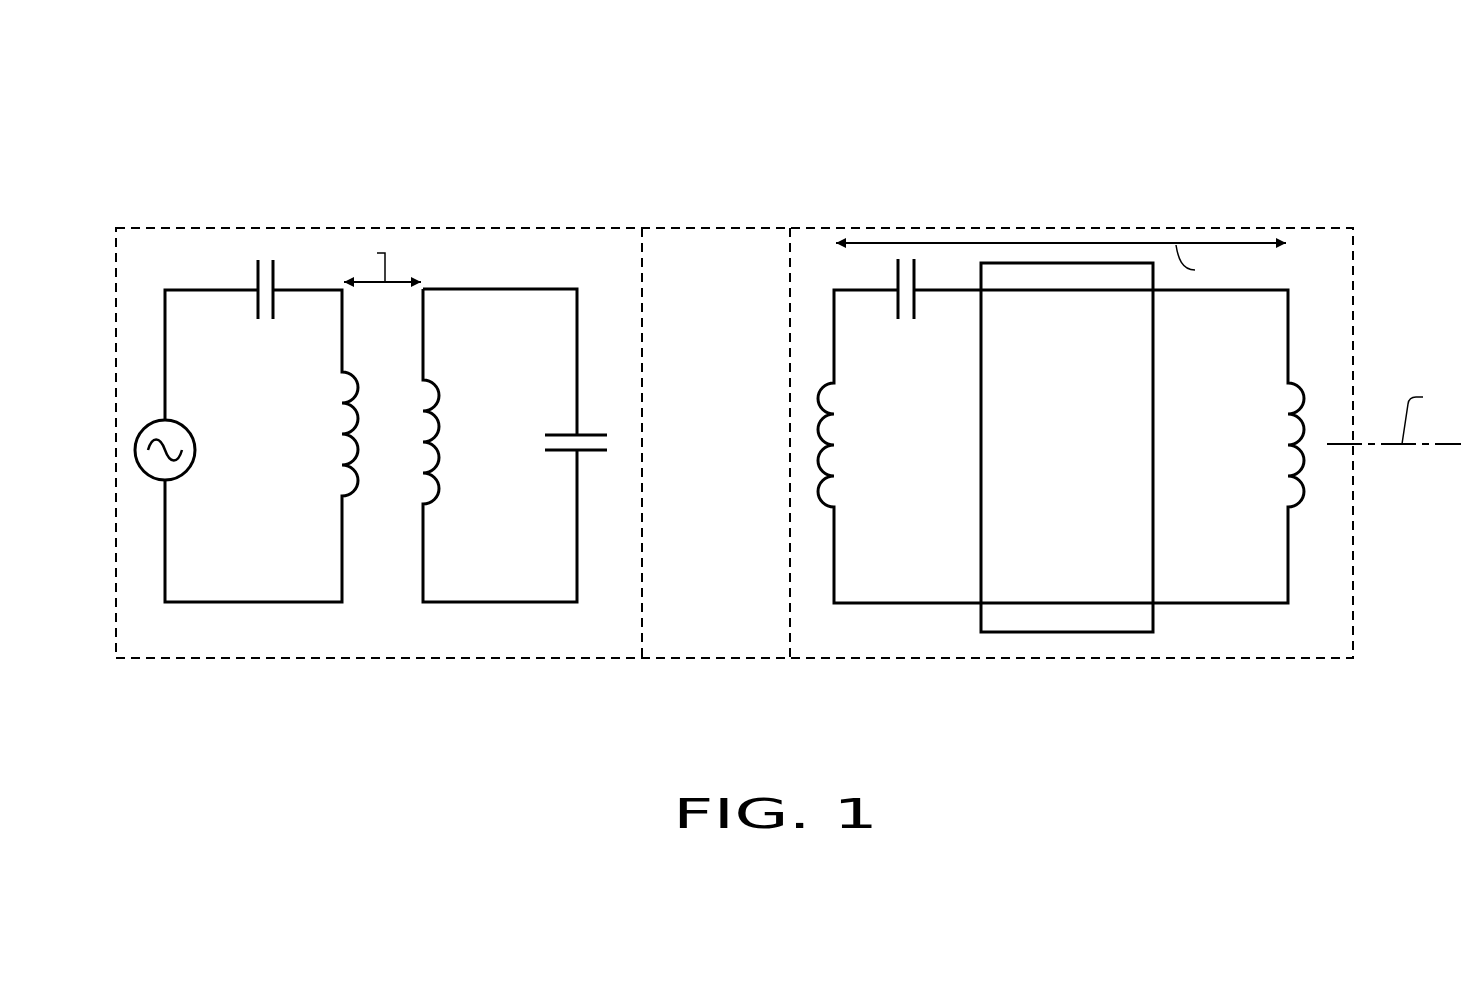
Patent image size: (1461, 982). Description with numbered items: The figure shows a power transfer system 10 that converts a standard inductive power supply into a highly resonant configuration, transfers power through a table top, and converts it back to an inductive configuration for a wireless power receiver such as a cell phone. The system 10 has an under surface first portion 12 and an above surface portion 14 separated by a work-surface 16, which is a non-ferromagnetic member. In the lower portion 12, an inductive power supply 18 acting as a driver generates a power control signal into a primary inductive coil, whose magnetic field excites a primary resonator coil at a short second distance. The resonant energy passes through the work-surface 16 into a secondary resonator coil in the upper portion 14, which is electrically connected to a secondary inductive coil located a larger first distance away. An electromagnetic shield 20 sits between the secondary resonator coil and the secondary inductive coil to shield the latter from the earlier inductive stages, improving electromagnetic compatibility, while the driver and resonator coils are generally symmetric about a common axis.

The system 10 is at (503, 130).
The under surface first portion 12 is at (283, 210).
The above surface portion 14 is at (1170, 195).
The work-surface 16 is at (708, 228).
The inductive power supply 18 is at (242, 613).
The electromagnetic shield 20 is at (1090, 517).